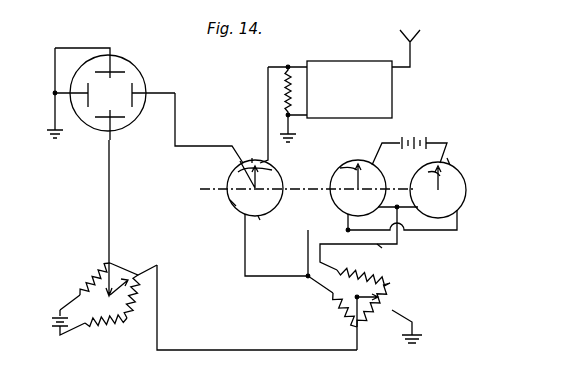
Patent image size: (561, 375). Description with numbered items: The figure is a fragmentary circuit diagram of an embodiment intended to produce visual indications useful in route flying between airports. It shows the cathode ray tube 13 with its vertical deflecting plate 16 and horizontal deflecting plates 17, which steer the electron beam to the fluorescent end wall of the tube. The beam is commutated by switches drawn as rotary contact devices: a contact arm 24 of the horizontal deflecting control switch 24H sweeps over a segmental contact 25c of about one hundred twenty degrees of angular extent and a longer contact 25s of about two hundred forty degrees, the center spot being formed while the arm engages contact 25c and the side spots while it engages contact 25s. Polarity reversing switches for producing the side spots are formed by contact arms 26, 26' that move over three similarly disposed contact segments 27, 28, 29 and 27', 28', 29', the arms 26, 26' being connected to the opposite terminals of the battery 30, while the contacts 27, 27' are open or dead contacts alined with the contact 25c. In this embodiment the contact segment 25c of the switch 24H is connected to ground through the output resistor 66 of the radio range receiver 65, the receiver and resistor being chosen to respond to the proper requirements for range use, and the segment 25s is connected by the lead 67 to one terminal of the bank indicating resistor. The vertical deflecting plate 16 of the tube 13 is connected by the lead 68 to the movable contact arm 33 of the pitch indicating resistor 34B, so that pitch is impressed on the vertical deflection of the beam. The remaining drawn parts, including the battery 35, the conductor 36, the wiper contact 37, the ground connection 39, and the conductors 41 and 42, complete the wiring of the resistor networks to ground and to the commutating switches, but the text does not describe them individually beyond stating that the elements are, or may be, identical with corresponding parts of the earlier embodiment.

The cathode ray tube 13 is at (143, 52).
The vertical deflecting plate 16 is at (110, 94).
The horizontal deflecting plates 17 is at (88, 78).
The contact arm 24 is at (283, 178).
The horizontal deflecting control switch 24H is at (232, 204).
The segmental contact 25c is at (252, 158).
The longer contact 25s is at (259, 218).
The contact arm 26 is at (341, 158).
The contact arm 26' is at (428, 181).
The contact segment 27 is at (378, 145).
The contact segment 27' is at (461, 145).
The contact segment 28 is at (325, 216).
The contact segment 28' is at (402, 236).
The contact segment 29 is at (370, 188).
The contact segment 29' is at (455, 190).
The battery 30 is at (425, 133).
The movable contact arm 33 is at (108, 295).
The pitch indicating resistor 34B is at (126, 320).
The battery 35 is at (56, 333).
The conductor 36 is at (232, 349).
The wiper contact 37 is at (357, 296).
The ground connection 39 is at (413, 324).
The conductor 41 is at (308, 262).
The conductor 42 is at (378, 246).
The radio range receiver 65 is at (366, 60).
The output resistor 66 is at (285, 92).
The lead 67 is at (245, 262).
The lead 68 is at (108, 228).